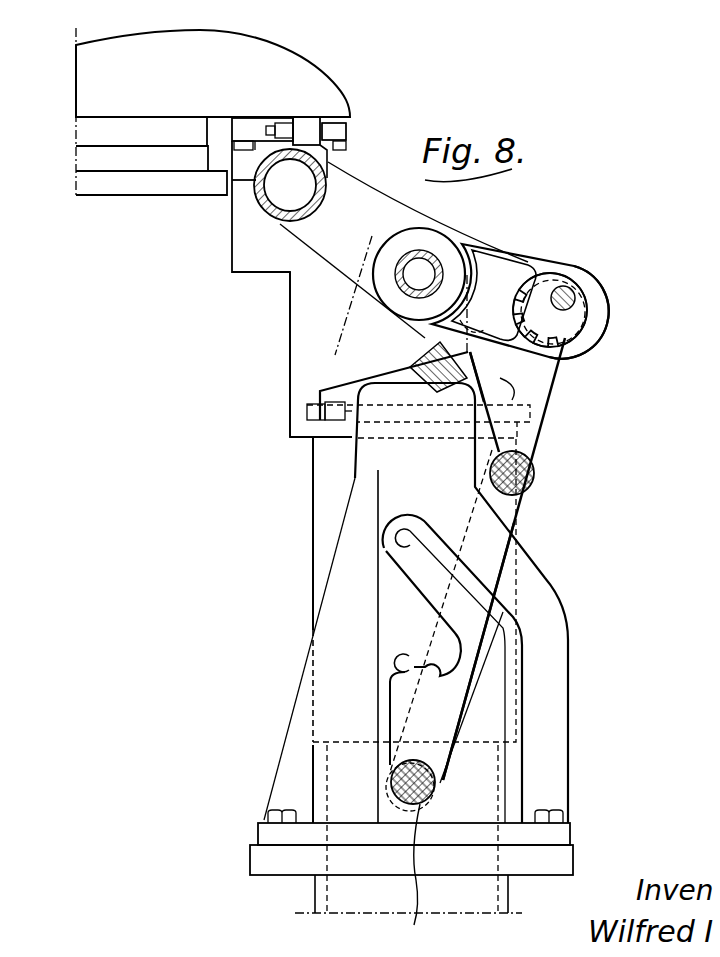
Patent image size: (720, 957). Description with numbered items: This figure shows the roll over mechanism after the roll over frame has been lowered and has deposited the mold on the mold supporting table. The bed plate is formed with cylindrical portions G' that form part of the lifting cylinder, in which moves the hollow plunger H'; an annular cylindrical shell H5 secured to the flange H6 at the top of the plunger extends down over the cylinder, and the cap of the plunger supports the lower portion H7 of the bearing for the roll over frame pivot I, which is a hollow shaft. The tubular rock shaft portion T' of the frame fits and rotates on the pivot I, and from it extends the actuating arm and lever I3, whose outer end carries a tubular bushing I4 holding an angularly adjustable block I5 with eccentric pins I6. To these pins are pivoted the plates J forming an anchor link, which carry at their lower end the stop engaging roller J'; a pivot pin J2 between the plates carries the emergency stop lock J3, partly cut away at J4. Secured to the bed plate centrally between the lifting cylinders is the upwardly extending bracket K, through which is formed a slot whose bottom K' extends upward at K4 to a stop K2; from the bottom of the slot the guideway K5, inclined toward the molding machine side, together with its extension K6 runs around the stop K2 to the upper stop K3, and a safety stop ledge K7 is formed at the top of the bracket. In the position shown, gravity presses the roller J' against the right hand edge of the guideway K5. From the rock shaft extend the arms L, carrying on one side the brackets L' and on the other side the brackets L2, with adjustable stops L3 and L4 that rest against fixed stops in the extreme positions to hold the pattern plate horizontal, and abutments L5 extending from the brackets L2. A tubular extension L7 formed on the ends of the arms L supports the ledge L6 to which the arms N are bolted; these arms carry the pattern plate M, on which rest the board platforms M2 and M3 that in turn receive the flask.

The arms N is at (213, 111).
The pattern plate M is at (141, 131).
The board platform M2 is at (142, 158).
The board platform M3 is at (151, 183).
The ledge L6 is at (262, 134).
The brackets L' is at (306, 147).
The adjustable stop L3 is at (346, 128).
The arms of roll over frame L is at (301, 188).
The tubular extension L7 is at (326, 182).
The abutments L5 is at (292, 289).
The brackets L2 is at (300, 354).
The adjustable stop L4 is at (310, 430).
The roll over frame pivot I is at (470, 244).
The pulley hub T' is at (435, 248).
The actuating arm and lever I3 is at (505, 262).
The angularly adjustable block I5 is at (535, 281).
The eccentric pins I6 is at (572, 290).
The tubular bushing I4 is at (596, 324).
The lower portion of bearing H7 is at (477, 310).
The emergency stop lock J3 is at (407, 356).
The safety stop ledge K7 is at (397, 380).
The flange H6 is at (500, 379).
The link plates J is at (508, 559).
The cut-away portion J4 is at (490, 400).
The pivot pin J2 is at (520, 475).
The annular cylindrical shell H5 is at (313, 512).
The hollow plunger H' is at (363, 597).
The guideway extension K6 is at (452, 669).
The upper stop K3 is at (395, 549).
The stop K2 is at (396, 670).
The upward slot extension K4 is at (441, 611).
The guideway K5 is at (477, 653).
The bracket K is at (461, 603).
The stop engaging roller J' is at (427, 785).
The bottom of slot K' is at (410, 879).
The cylindrical portions of bed plate G' is at (411, 829).